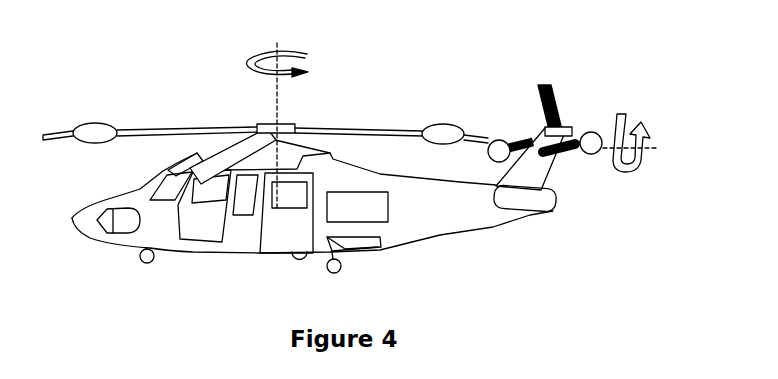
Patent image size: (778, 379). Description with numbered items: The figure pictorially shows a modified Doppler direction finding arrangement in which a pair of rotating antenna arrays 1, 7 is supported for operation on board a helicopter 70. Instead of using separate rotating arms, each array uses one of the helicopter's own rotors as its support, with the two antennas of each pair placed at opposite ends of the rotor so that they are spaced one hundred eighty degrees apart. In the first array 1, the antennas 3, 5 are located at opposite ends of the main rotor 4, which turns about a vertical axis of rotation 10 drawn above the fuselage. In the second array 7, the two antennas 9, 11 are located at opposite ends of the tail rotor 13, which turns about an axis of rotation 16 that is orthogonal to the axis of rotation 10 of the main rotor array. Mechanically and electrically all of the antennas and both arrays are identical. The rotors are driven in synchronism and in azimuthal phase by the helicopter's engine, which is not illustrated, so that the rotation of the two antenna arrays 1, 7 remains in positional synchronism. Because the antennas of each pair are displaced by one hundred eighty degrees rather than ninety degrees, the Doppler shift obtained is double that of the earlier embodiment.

The first rotating antenna array 1 is at (258, 126).
The antenna 3 is at (80, 142).
The main rotor 4 is at (348, 128).
The antenna 5 is at (443, 121).
The second rotating antenna array 7 is at (559, 132).
The antenna 9 is at (497, 139).
The axis of rotation 10 is at (253, 56).
The antenna 11 is at (597, 131).
The tail rotor 13 is at (553, 100).
The axis of rotation 16 is at (658, 148).
The helicopter 70 is at (493, 223).